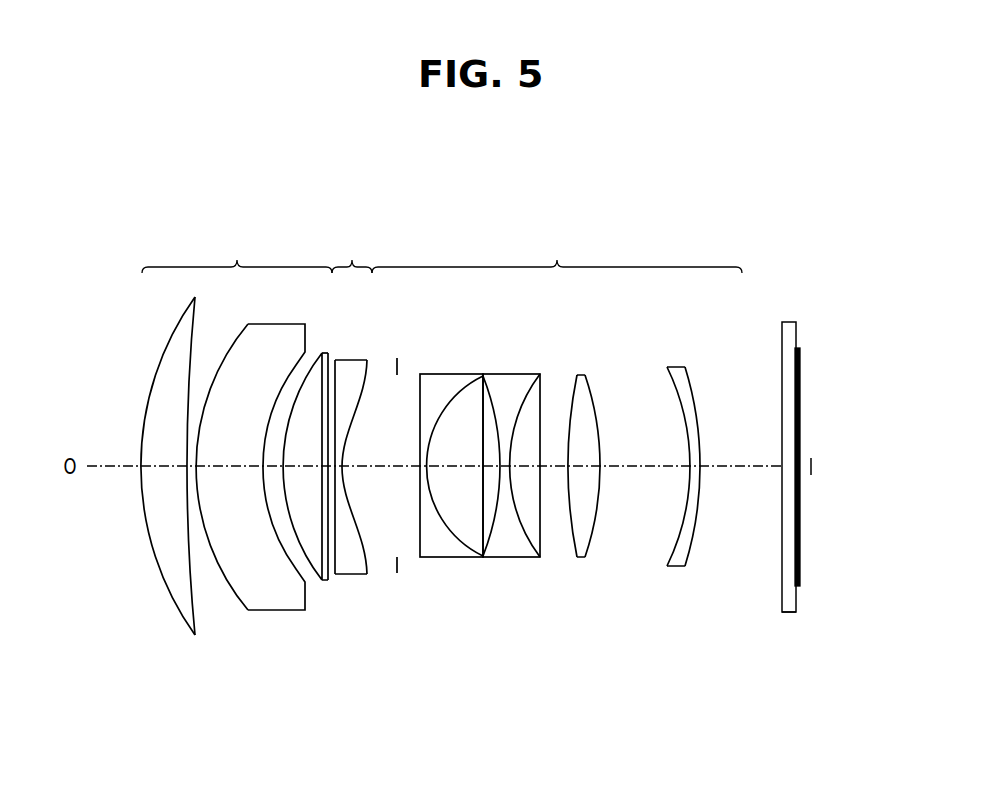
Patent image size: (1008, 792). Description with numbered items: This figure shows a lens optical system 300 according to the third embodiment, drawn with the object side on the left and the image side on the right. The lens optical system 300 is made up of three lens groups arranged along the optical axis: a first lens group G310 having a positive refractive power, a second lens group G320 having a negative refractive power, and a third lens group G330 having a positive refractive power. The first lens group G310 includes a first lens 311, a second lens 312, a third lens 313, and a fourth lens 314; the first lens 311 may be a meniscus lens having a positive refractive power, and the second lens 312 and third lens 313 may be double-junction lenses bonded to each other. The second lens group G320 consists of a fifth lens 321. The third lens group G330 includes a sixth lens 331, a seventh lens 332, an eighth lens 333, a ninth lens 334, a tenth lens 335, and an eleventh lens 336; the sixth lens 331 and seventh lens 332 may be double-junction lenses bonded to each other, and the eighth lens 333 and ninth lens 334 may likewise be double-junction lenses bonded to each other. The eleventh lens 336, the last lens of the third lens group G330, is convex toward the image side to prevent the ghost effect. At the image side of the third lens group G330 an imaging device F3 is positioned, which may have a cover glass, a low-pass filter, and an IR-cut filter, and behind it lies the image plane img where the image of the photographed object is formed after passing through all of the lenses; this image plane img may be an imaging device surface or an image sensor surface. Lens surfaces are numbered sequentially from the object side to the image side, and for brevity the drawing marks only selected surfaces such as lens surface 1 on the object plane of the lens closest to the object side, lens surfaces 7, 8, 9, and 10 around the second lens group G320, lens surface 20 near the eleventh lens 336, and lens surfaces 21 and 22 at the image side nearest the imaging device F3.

The lens surface 1 is at (170, 332).
The lens surface 7 is at (323, 350).
The lens surface 8 is at (337, 358).
The lens surface 9 is at (368, 358).
The lens surface 10 is at (400, 358).
The lens surface 20 is at (690, 367).
The lens surface 21 is at (781, 328).
The lens surface 22 is at (798, 345).
The lens optical system 300 is at (722, 168).
The first lens 311 is at (185, 608).
The second lens 312 is at (240, 585).
The third lens 313 is at (273, 598).
The fourth lens 314 is at (315, 577).
The fifth lens 321 is at (352, 573).
The sixth lens 331 is at (433, 553).
The seventh lens 332 is at (468, 530).
The eighth lens 333 is at (506, 549).
The ninth lens 334 is at (540, 553).
The tenth lens 335 is at (582, 555).
The eleventh lens 336 is at (673, 568).
The imaging device F3 is at (788, 612).
The image plane img is at (800, 397).
The first lens group G310 is at (237, 252).
The second lens group G320 is at (352, 252).
The third lens group G330 is at (557, 252).